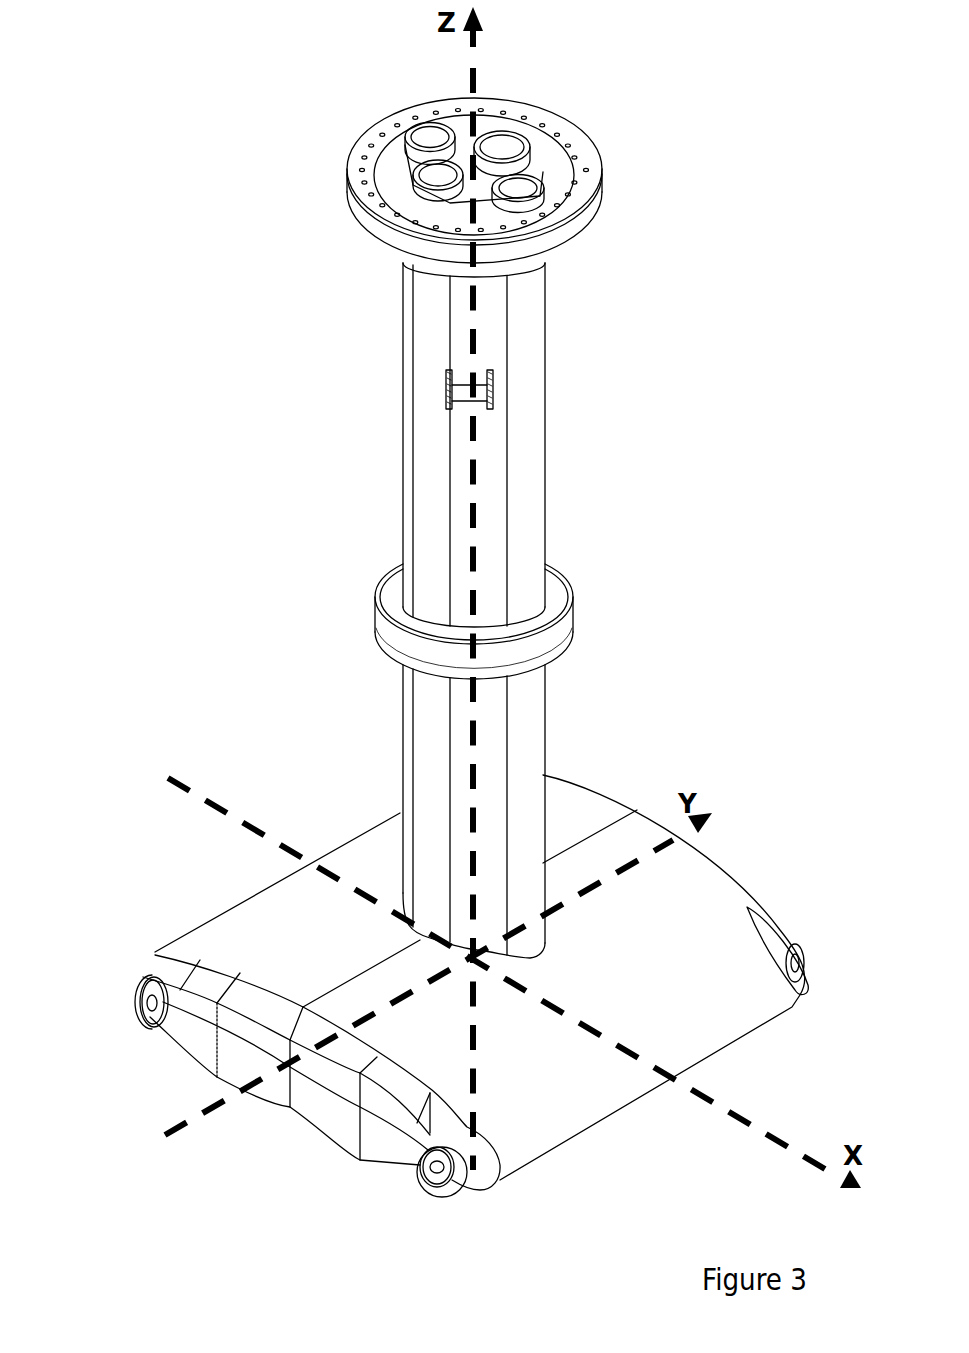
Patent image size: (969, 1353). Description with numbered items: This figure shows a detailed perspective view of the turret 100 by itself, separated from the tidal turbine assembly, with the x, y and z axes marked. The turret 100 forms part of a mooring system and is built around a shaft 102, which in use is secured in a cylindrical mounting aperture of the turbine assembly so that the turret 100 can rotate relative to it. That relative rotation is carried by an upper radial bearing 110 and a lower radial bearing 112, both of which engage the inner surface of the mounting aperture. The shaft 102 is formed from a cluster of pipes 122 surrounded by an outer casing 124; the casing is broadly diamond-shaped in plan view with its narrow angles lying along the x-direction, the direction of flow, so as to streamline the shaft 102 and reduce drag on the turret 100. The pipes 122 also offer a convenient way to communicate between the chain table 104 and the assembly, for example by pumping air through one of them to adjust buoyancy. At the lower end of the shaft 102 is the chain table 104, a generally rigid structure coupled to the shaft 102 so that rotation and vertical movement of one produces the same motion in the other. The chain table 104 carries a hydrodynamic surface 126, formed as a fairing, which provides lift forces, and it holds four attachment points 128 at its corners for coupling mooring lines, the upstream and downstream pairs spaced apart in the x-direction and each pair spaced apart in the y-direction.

The turret 100 is at (146, 431).
The shaft 102 is at (698, 478).
The chain table 104 is at (658, 1145).
The upper radial bearing 110 is at (393, 242).
The lower radial bearing 112 is at (403, 645).
The pipes 122 is at (527, 130).
The outer casing 124 is at (477, 445).
The hydrodynamic surface 126 is at (315, 900).
The attachment points 128 is at (150, 1007).